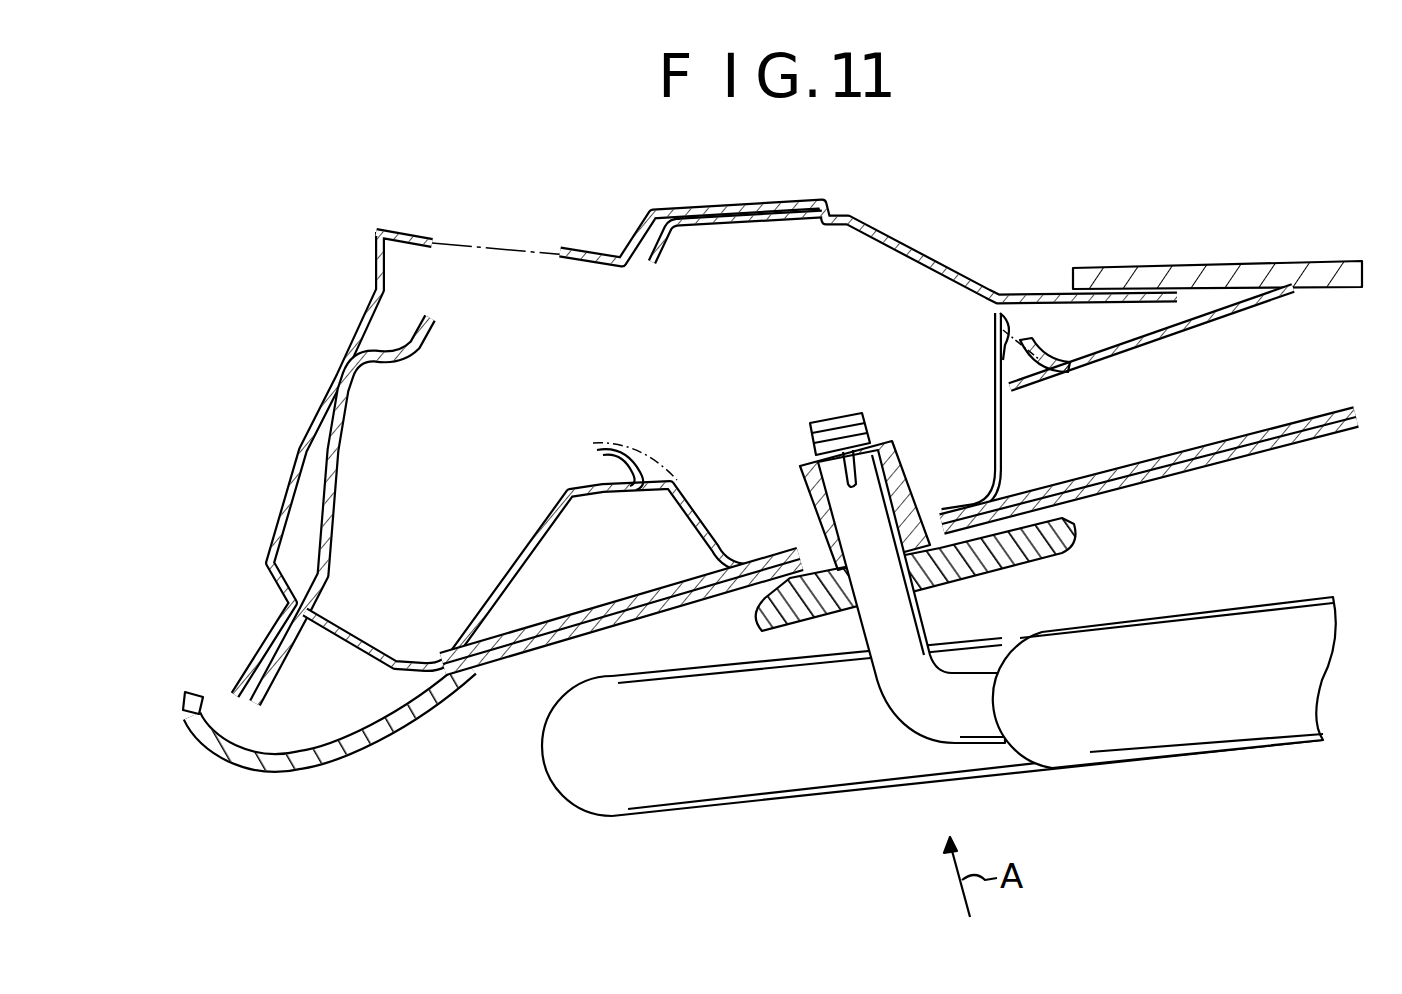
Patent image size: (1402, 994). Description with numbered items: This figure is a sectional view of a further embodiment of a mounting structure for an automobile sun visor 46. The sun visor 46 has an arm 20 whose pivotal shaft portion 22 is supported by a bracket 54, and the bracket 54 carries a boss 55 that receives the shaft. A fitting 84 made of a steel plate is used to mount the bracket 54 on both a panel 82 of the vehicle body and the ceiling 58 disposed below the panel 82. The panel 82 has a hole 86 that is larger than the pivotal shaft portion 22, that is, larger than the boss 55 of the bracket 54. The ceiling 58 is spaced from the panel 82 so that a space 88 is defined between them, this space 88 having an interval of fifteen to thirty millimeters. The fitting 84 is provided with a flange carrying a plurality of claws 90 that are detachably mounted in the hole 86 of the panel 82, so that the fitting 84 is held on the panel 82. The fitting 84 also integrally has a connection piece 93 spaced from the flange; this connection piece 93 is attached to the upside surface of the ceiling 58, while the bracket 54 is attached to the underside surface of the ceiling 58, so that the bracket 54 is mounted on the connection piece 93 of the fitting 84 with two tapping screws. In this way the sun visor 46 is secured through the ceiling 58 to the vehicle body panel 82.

The arm 20 is at (977, 722).
The pivotal shaft portion 22 is at (882, 670).
The sun visor 46 is at (1185, 740).
The bracket 54 is at (1042, 548).
The boss 55 is at (900, 505).
The ceiling 58 is at (1243, 465).
The panel 82 is at (1196, 330).
The fitting 84 is at (1004, 447).
The hole 86 is at (640, 488).
The space 88 is at (530, 607).
The claws 90 is at (1050, 365).
The connection piece 93 is at (767, 580).